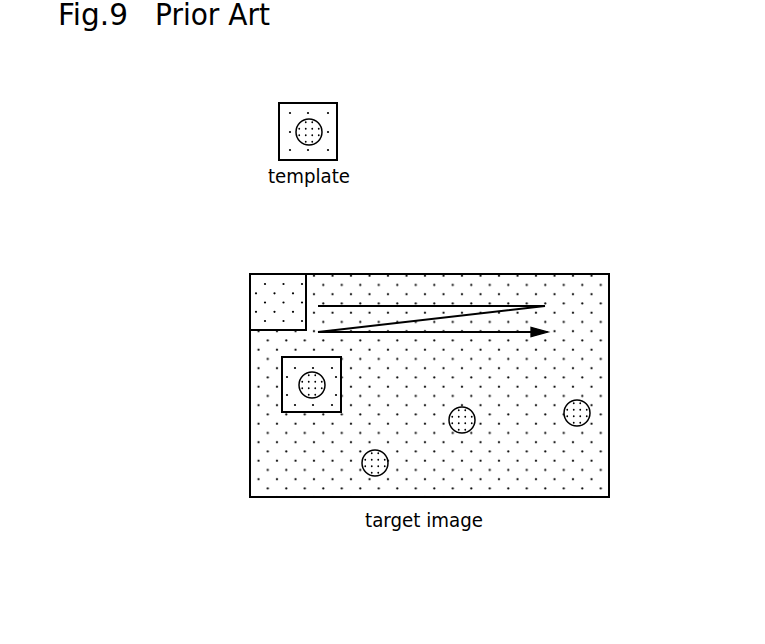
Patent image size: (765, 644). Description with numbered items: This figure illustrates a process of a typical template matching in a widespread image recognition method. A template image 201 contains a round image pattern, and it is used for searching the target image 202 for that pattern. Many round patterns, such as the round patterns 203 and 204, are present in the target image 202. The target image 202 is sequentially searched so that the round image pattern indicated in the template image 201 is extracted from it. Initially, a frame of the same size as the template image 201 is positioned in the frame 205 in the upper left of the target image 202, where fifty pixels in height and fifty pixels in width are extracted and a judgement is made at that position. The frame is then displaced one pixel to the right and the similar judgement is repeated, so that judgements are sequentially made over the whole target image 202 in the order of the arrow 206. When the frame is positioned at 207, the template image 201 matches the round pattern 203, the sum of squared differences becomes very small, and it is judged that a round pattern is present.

The template image 201 is at (326, 122).
The target image 202 is at (567, 274).
The round pattern 203 is at (300, 384).
The round pattern 204 is at (592, 414).
The frame 205 is at (287, 292).
The arrow 206 is at (431, 303).
The frame position 207 is at (281, 405).